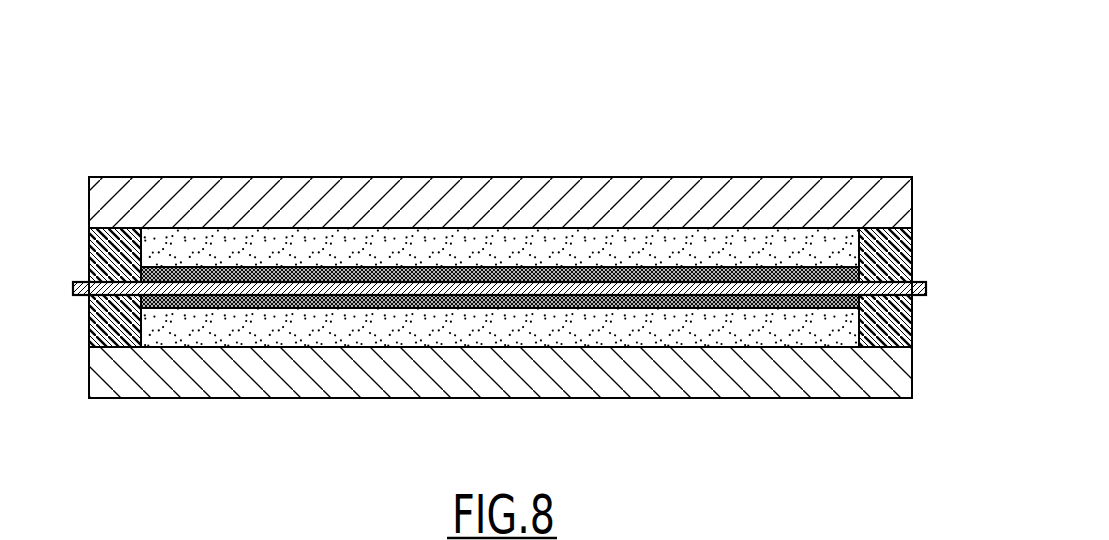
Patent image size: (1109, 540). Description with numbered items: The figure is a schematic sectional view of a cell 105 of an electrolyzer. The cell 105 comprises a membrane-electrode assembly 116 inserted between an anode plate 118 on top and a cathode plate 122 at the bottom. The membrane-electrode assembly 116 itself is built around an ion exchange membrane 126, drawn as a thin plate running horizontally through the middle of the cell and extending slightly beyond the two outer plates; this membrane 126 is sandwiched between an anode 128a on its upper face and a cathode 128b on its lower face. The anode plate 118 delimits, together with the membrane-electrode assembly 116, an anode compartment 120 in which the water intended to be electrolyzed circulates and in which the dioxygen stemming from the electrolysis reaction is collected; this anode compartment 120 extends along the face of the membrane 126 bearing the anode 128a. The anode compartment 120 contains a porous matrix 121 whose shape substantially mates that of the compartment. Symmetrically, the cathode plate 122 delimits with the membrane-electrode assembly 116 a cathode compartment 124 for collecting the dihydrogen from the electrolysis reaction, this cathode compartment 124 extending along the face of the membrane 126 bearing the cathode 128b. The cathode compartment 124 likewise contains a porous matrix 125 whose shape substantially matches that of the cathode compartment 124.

The cell 105 is at (786, 106).
The membrane-electrode assembly 116 is at (68, 272).
The anode plate 118 is at (862, 200).
The anode compartment 120 is at (543, 248).
The porous matrix 121 is at (297, 252).
The cathode plate 122 is at (855, 385).
The cathode compartment 124 is at (403, 318).
The porous matrix 125 is at (250, 325).
The ion exchange membrane 126 is at (932, 288).
The anode 128a is at (680, 265).
The cathode 128b is at (623, 308).